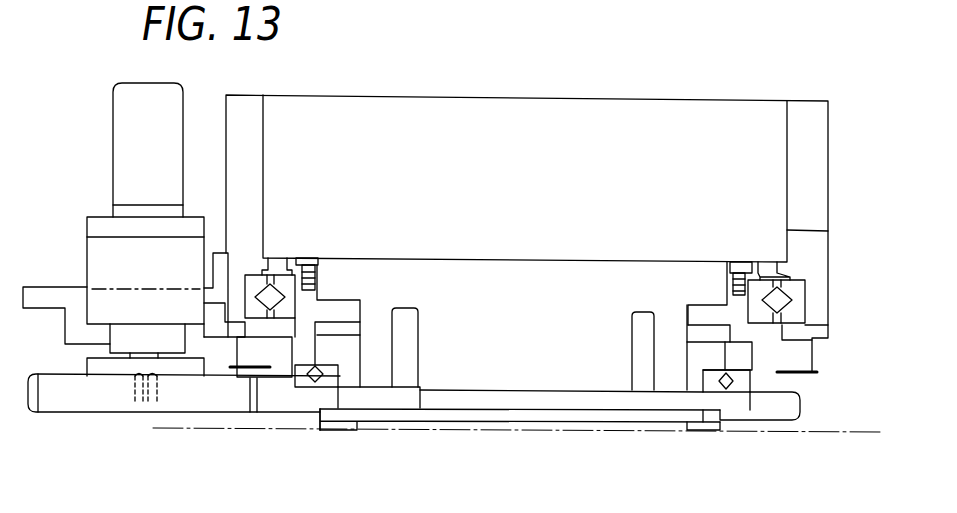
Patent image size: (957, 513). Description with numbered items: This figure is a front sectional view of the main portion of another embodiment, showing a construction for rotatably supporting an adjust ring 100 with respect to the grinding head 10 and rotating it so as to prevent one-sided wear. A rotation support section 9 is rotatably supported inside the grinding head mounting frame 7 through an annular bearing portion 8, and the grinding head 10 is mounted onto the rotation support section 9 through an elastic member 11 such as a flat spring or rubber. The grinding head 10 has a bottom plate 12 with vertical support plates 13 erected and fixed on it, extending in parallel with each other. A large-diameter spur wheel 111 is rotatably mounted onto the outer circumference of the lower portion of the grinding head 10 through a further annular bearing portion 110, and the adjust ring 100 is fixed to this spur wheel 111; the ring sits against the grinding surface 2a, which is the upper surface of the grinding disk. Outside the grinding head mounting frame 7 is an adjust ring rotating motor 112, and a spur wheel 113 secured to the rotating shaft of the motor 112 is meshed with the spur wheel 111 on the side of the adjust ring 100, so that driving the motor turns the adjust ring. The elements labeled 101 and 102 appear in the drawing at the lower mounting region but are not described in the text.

The grinding head mounting frame 7 is at (667, 115).
The annular bearing portion 8 is at (753, 275).
The rotation support section 9 is at (704, 303).
The grinding head 10 is at (632, 345).
The elastic member 11 is at (693, 333).
The bottom plate 12 is at (630, 395).
The vertical support plates 13 is at (425, 335).
The grinding surface 2a is at (505, 420).
The adjust ring 100 is at (323, 418).
The mounting pad 101 is at (703, 423).
The spacer 102 is at (348, 431).
The annular bearing portion 110 is at (300, 389).
The large-diameter spur wheel 111 is at (268, 403).
The adjust ring rotating motor 112 is at (123, 158).
The spur wheel 113 is at (95, 404).